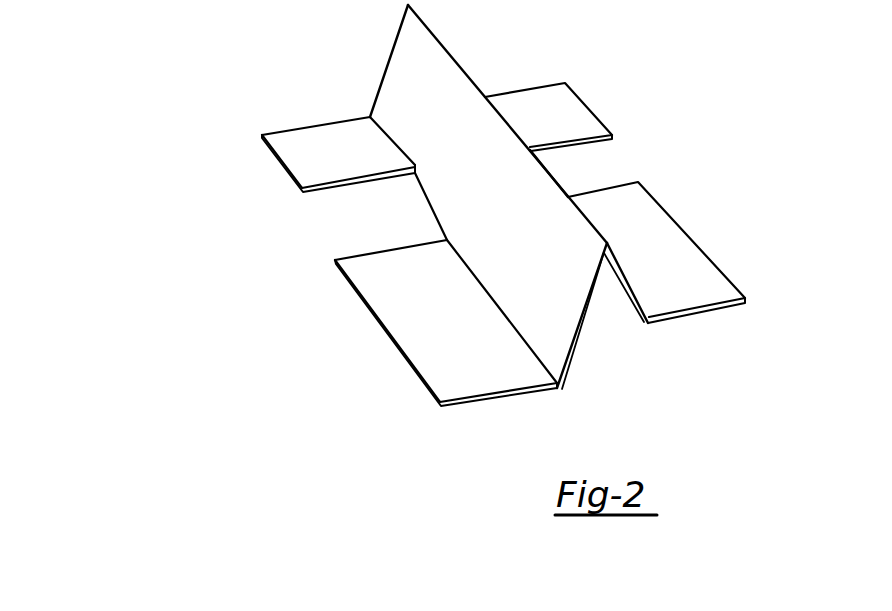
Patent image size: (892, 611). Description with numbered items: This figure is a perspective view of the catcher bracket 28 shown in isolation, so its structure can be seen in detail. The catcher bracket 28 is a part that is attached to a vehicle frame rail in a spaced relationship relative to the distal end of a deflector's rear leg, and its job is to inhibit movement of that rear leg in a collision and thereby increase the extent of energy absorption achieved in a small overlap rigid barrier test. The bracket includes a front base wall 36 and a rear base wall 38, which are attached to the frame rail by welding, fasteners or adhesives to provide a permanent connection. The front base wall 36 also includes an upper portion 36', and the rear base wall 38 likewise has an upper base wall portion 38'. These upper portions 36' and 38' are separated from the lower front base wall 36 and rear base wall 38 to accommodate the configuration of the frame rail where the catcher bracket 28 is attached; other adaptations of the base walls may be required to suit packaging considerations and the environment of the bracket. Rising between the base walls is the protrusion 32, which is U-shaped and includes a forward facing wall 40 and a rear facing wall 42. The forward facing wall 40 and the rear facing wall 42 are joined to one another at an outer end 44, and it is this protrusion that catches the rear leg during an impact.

The catcher bracket 28 is at (506, 206).
The protrusion 32 is at (390, 50).
The front base wall 36 is at (424, 323).
The upper portion of front base wall 36' is at (338, 135).
The rear base wall 38 is at (656, 249).
The upper base wall portion 38' is at (553, 101).
The forward facing wall 40 is at (550, 307).
The rear facing wall 42 is at (633, 283).
The outer end 44 is at (550, 165).